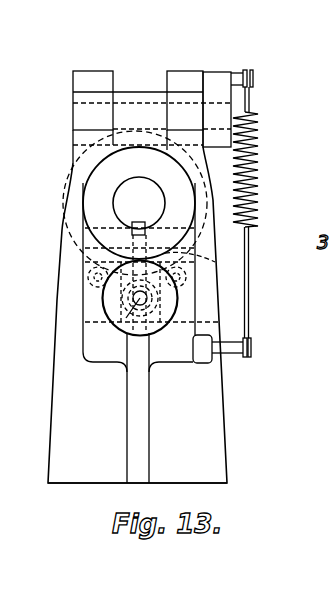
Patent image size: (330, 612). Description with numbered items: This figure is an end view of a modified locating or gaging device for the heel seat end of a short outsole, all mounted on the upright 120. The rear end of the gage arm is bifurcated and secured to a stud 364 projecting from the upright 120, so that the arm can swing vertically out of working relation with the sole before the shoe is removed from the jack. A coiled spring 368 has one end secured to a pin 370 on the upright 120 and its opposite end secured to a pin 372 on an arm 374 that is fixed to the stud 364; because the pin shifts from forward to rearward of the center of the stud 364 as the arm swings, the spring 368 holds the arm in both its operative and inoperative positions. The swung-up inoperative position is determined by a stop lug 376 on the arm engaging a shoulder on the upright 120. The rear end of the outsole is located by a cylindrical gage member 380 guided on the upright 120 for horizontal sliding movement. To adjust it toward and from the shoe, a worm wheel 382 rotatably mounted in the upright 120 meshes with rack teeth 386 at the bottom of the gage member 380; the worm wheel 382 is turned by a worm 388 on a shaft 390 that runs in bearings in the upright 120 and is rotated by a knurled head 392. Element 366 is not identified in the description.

The stop lug 376 is at (90, 78).
The cross member 366 is at (139, 90).
The arm 374 is at (218, 78).
The pin 372 is at (254, 78).
The stud 364 is at (92, 104).
The coiled spring 368 is at (258, 166).
The cylindrical gage member 380 is at (139, 203).
The rack teeth 386 is at (131, 229).
The worm wheel 382 is at (215, 262).
The knurled head 392 is at (103, 303).
The worm 388 is at (83, 304).
The shaft 390 is at (140, 298).
The pin 370 is at (228, 352).
The upright 120 is at (208, 453).